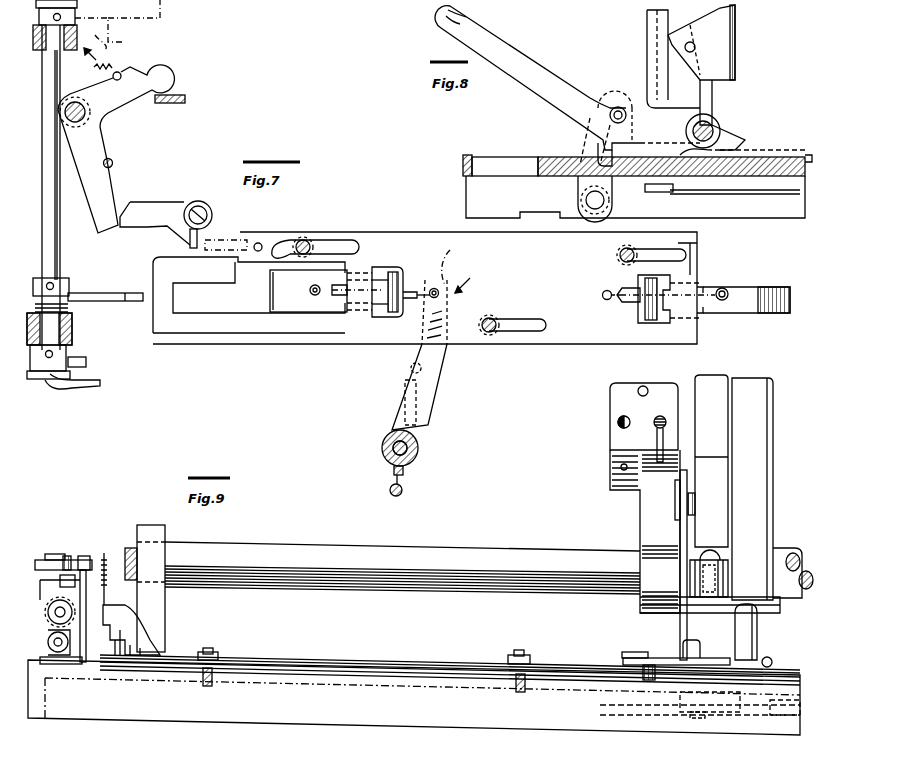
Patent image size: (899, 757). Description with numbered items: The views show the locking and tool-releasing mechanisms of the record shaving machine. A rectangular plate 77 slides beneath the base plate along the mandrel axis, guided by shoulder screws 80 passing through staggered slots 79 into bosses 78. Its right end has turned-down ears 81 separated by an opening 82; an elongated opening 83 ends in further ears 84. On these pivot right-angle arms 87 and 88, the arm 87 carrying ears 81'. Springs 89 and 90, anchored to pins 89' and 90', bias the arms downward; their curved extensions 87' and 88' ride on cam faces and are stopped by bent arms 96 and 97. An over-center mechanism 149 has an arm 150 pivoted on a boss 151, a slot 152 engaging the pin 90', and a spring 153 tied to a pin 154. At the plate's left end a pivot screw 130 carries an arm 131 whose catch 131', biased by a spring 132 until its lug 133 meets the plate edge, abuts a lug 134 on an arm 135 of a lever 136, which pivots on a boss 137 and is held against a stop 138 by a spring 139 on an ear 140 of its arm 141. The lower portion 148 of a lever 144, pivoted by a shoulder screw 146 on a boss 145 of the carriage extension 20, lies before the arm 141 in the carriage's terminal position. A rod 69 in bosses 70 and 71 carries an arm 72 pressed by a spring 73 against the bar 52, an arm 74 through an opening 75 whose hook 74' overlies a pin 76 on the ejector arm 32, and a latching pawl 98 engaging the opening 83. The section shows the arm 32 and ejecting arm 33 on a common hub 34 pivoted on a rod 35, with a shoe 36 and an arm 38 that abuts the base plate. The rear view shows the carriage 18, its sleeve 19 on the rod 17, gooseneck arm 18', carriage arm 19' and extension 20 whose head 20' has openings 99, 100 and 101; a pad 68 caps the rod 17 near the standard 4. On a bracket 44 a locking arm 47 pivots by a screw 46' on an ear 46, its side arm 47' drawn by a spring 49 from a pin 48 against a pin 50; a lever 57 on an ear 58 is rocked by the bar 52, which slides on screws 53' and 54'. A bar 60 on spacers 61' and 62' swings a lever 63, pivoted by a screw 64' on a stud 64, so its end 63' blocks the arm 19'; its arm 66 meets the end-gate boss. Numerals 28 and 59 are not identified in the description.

In FIG. 9, the right-hand standard 4 is at (165, 533).
In FIG. 9, the rod 17 is at (188, 551).
In FIG. 9, the carriage 18 is at (711, 483).
In FIG. 9, the gooseneck arm 18' is at (767, 489).
In FIG. 9, the sleeve 19 is at (793, 561).
In FIG. 9, the carriage arm 19' is at (767, 632).
In FIG. 9, the forward extension 20 is at (643, 531).
In FIG. 9, the head 20' is at (631, 415).
In FIG. 8, the bed end 28 is at (474, 156).
In FIG. 7, the operating arm 32 is at (90, 386).
In FIG. 8, the operating arm 32 is at (530, 72).
In FIG. 8, the record ejecting arm 33 is at (670, 72).
In FIG. 8, the common hub 34 is at (720, 118).
In FIG. 8, the rod 35 is at (720, 128).
In FIG. 8, the shoe 36 is at (720, 65).
In FIG. 8, the arm 38 is at (740, 132).
In FIG. 9, the upstanding bracket 44 is at (40, 660).
In FIG. 9, the turned-over ear 46 is at (59, 583).
In FIG. 9, the shoulder screw 46' is at (62, 553).
In FIG. 9, the locking arm 47 is at (58, 553).
In FIG. 9, the short side arm 47' is at (88, 553).
In FIG. 9, the pin 48 is at (90, 585).
In FIG. 9, the tension spring 49 is at (92, 570).
In FIG. 9, the short pin 50 is at (78, 556).
In FIG. 8, the bar 52 is at (808, 153).
In FIG. 9, the bar 52 is at (92, 665).
In FIG. 9, the shoulder screw 53' is at (535, 642).
In FIG. 9, the shoulder screw 54' is at (227, 636).
In FIG. 9, the lever 57 is at (48, 632).
In FIG. 9, the turned over ear 58 is at (48, 600).
In FIG. 7, the pin 59 is at (110, 35).
In FIG. 9, the pin 59 is at (770, 660).
In FIG. 9, the bar 60 is at (328, 658).
In FIG. 9, the spacer 61' is at (513, 646).
In FIG. 9, the spacer 62' is at (201, 639).
In FIG. 9, the lever 63 is at (676, 642).
In FIG. 9, the end portion 63' is at (709, 642).
In FIG. 9, the stud 64 is at (642, 708).
In FIG. 9, the screw 64' is at (629, 639).
In FIG. 9, the arm 66 is at (104, 553).
In FIG. 9, the resilient pad 68 is at (130, 548).
In FIG. 7, the rod 69 is at (60, 248).
In FIG. 8, the rod 69 is at (605, 203).
In FIG. 7, the front boss 70 is at (74, 330).
In FIG. 7, the back boss 71 is at (38, 47).
In FIG. 8, the arm 72 is at (596, 150).
In FIG. 7, the torsional spring 73 is at (70, 306).
In FIG. 7, the arm 74 is at (63, 379).
In FIG. 8, the arm 74 is at (577, 141).
In FIG. 8, the hook 74' is at (615, 104).
In FIG. 8, the opening 75 is at (574, 166).
In FIG. 7, the lateral pin 76 is at (80, 357).
In FIG. 8, the lateral pin 76 is at (610, 112).
In FIG. 7, the plate 77 is at (432, 240).
In FIG. 8, the plate 77 is at (745, 196).
In FIG. 9, the plate 77 is at (588, 710).
In FIG. 7, the bosses 78 is at (650, 235).
In FIG. 7, the slots 79 is at (345, 242).
In FIG. 7, the shoulder screws 80 is at (303, 239).
In FIG. 7, the turned down ears 81 is at (697, 300).
In FIG. 7, the turned-down ears 81' is at (720, 297).
In FIG. 7, the opening 82 is at (660, 325).
In FIG. 7, the elongated opening 83 is at (244, 323).
In FIG. 7, the turned down ears 84 is at (366, 268).
In FIG. 7, the right-angle arm 87 is at (746, 319).
In FIG. 7, the curved extension 87' is at (628, 325).
In FIG. 7, the right angle arm 88 is at (308, 317).
In FIG. 7, the curved extension 88' is at (405, 282).
In FIG. 7, the tension spring 89 is at (651, 308).
In FIG. 7, the pin 89' is at (604, 272).
In FIG. 7, the tension spring 90 is at (381, 278).
In FIG. 7, the pin 90' is at (460, 262).
In FIG. 7, the downwardly bent arm 96 is at (672, 275).
In FIG. 7, the downwardly bent arm 97 is at (384, 318).
In FIG. 7, the latching pawl 98 is at (115, 293).
In FIG. 8, the latching pawl 98 is at (648, 188).
In FIG. 9, the left opening 99 is at (668, 421).
In FIG. 9, the right opening 100 is at (618, 424).
In FIG. 9, the opening 101 is at (645, 388).
In FIG. 7, the pivot screw 130 is at (198, 201).
In FIG. 7, the arm 131 is at (155, 223).
In FIG. 9, the arm 131 is at (700, 697).
In FIG. 7, the V-shaped catch 131' is at (139, 193).
In FIG. 7, the tension spring 132 is at (228, 233).
In FIG. 7, the lug 133 is at (196, 248).
In FIG. 7, the lug 134 is at (106, 235).
In FIG. 9, the lug 134 is at (760, 715).
In FIG. 7, the arm 135 is at (103, 187).
In FIG. 7, the lever 136 is at (104, 135).
In FIG. 9, the lever 136 is at (722, 715).
In FIG. 7, the boss 137 is at (77, 98).
In FIG. 9, the boss 137 is at (790, 700).
In FIG. 7, the stop 138 is at (110, 158).
In FIG. 7, the tension spring 139 is at (112, 62).
In FIG. 7, the ear 140 is at (122, 70).
In FIG. 7, the arm 141 is at (163, 70).
In FIG. 9, the lever 144 is at (690, 540).
In FIG. 9, the boss 145 is at (684, 490).
In FIG. 9, the shoulder screw 146 is at (693, 500).
In FIG. 7, the lower portion 148 is at (186, 99).
In FIG. 9, the lower portion 148 is at (692, 720).
In FIG. 7, the over-center mechanism 149 is at (479, 280).
In FIG. 7, the arm 150 is at (430, 377).
In FIG. 7, the boss 151 is at (386, 460).
In FIG. 7, the slot 152 is at (442, 286).
In FIG. 7, the tension spring 153 is at (404, 470).
In FIG. 7, the pin 154 is at (403, 491).